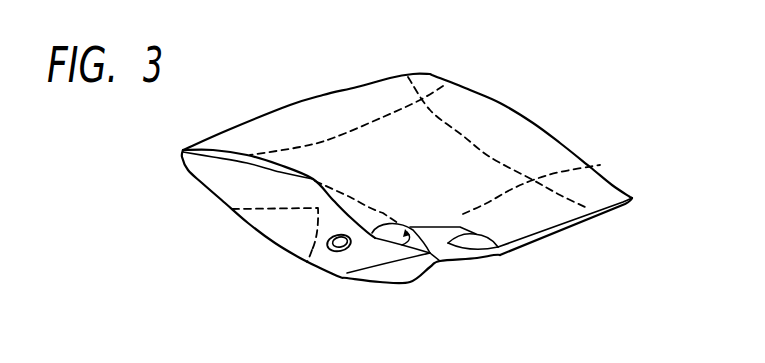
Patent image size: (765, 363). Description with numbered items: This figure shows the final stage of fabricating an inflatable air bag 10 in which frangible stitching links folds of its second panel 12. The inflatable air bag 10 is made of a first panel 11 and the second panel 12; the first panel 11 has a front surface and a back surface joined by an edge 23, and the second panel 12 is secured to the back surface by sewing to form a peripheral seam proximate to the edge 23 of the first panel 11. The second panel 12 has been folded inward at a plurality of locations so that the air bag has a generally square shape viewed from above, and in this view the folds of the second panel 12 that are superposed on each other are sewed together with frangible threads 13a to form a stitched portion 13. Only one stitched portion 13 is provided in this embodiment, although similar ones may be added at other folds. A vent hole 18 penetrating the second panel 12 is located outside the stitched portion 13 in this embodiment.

The inflatable air bag 10 is at (492, 74).
The first panel 11 is at (510, 130).
The second panel 12 is at (213, 181).
The stitched portion 13 is at (269, 217).
The frangible threads 13a is at (313, 238).
The vent hole 18 is at (327, 255).
The edge 23 is at (458, 224).